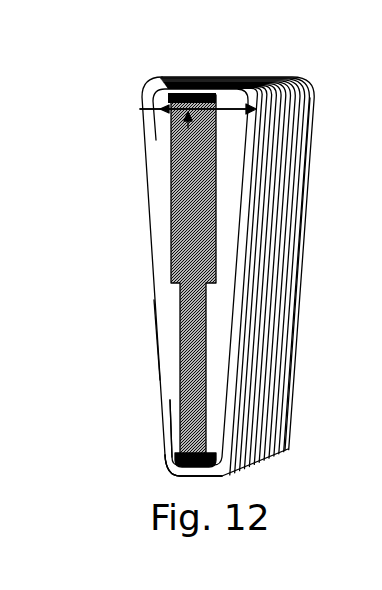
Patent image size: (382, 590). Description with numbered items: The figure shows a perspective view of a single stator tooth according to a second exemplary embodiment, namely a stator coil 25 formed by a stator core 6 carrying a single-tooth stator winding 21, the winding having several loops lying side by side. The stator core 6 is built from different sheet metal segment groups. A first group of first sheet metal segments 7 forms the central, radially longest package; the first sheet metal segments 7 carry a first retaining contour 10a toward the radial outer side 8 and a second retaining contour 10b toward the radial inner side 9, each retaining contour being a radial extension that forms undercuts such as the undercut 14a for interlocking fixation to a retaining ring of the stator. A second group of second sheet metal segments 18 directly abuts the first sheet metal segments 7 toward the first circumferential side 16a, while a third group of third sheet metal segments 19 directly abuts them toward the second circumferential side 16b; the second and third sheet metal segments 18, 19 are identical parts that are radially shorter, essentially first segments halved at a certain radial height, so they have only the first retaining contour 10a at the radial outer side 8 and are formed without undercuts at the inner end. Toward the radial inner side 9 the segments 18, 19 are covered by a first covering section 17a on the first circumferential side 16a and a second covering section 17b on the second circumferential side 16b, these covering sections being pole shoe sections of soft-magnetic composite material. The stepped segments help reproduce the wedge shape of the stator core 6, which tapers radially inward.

The stator coil 25 is at (163, 66).
The first circumferential side 16a is at (298, 82).
The second circumferential side 16b is at (146, 89).
The first covering section 17a is at (232, 191).
The second covering section 17b is at (155, 197).
The second sheet metal segments 18 is at (172, 221).
The third sheet metal segments 19 is at (222, 234).
The stator winding 21 is at (301, 279).
The first sheet metal segments 7 is at (177, 293).
The stator core 6 is at (167, 342).
The radial outer side 8 is at (144, 110).
The radial inner side 9 is at (162, 466).
The first retaining contour 10a is at (144, 110).
The second retaining contour 10b is at (162, 466).
The undercut 14a is at (170, 153).